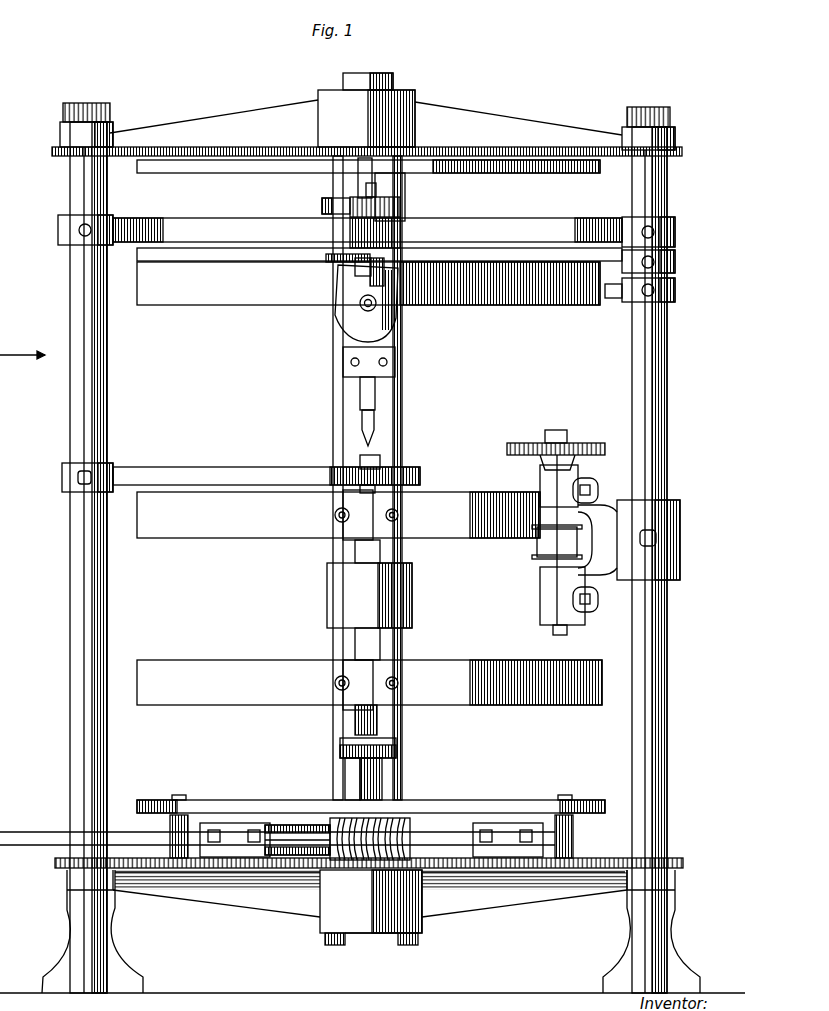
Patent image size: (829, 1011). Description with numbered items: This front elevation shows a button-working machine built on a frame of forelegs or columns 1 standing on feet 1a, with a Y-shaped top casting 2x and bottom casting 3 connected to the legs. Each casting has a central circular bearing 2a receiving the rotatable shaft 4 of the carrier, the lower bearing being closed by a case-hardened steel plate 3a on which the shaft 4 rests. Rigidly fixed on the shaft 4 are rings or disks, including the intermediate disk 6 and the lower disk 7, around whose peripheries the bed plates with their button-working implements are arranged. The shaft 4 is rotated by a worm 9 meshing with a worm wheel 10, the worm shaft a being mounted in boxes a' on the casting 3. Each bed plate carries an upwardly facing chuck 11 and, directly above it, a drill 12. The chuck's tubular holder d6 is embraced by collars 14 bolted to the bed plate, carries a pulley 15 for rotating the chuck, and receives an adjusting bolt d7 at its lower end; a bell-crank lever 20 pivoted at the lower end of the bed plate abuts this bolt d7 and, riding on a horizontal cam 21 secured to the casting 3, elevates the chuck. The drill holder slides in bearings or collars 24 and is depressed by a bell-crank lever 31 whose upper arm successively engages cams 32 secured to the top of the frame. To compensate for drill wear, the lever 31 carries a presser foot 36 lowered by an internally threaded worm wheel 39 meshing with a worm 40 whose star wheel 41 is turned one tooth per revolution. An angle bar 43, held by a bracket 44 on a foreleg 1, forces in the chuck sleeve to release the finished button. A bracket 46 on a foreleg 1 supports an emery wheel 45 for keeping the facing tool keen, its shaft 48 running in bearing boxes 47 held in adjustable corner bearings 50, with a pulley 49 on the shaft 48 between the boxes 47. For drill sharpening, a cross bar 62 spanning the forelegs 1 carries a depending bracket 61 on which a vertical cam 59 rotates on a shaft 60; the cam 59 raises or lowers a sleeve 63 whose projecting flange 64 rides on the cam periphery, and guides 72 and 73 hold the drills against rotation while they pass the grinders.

The forelegs or columns 1 is at (107, 389).
The feet 1a is at (90, 930).
The circular bearings 2a is at (370, 511).
The top casting 2x is at (367, 128).
The bottom casting 3 is at (369, 887).
The case-hardened steel plate 3a is at (375, 922).
The rotatable shaft 4 is at (393, 83).
The central or intermediate ring or disk 6 is at (338, 515).
The lower ring or disk 7 is at (369, 682).
The worm 9 is at (392, 815).
The worm wheel 10 is at (298, 825).
The chuck 11 is at (381, 464).
The drill 12 is at (376, 438).
The collars 14 is at (343, 503).
The pulley 15 is at (412, 612).
The bell-crank lever 20 is at (385, 780).
The cam 21 is at (250, 812).
The bearings or collars 24 is at (343, 375).
The bell-crank lever 31 is at (358, 185).
The cams 32 is at (280, 172).
The presser foot 36 is at (381, 188).
The worm wheel 39 is at (322, 207).
The worm 40 is at (400, 211).
The star wheel 41 is at (405, 193).
The angle bar 43 is at (251, 472).
The bracket 44 is at (62, 477).
The emery wheel 45 is at (520, 443).
The bracket 46 is at (680, 547).
The bearing boxes 47 is at (540, 476).
The shaft 48 is at (553, 632).
The pulley 49 is at (540, 548).
The corner bearings 50 is at (590, 485).
The cam 59 is at (340, 323).
The shaft 60 is at (364, 316).
The bracket 61 is at (372, 288).
The cross bar 62 is at (175, 230).
The sleeve 63 is at (355, 268).
The projecting flange 64 is at (326, 260).
The upper guide 72 is at (471, 300).
The lower guide 73 is at (613, 300).
The worm shaft a is at (297, 830).
The boxes a' is at (371, 818).
The tubular holder d6 is at (355, 647).
The adjusting bolt d7 is at (380, 752).